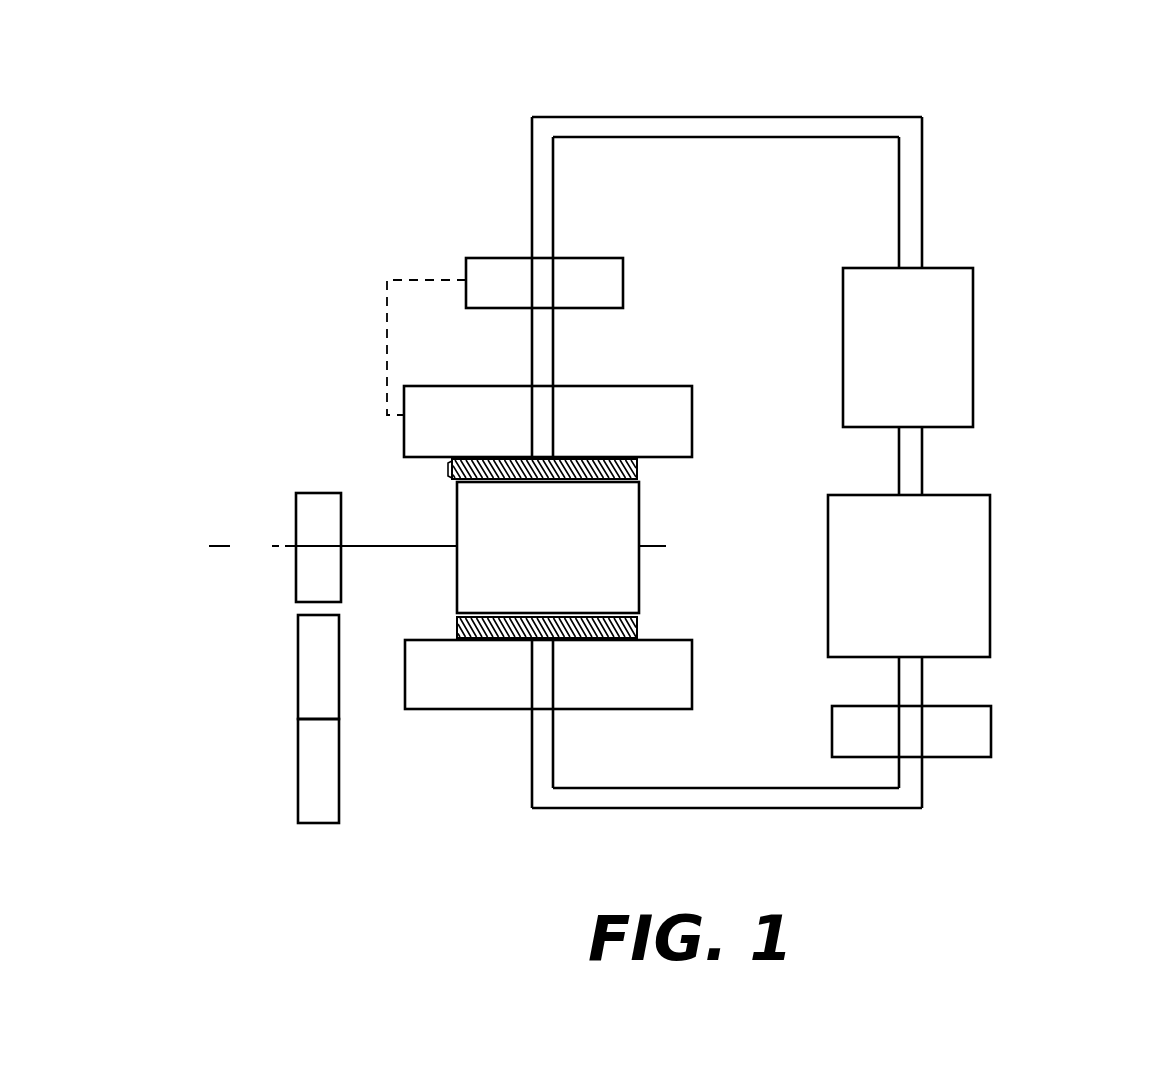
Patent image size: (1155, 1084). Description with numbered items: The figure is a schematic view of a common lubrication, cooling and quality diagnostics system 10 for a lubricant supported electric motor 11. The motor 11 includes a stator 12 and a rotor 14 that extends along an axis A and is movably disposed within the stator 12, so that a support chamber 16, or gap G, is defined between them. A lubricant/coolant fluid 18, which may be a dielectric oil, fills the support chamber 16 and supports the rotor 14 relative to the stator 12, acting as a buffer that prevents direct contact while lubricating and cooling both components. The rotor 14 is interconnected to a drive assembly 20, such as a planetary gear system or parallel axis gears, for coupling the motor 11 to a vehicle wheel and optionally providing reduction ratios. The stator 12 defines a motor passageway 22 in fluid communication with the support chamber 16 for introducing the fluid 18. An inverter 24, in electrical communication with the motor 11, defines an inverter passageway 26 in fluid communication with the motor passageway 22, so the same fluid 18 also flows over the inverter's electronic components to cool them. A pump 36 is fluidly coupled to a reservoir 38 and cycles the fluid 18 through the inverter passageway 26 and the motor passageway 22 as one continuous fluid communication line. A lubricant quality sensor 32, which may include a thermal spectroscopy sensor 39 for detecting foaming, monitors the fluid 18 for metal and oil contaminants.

The common lubrication, cooling and quality diagnostics system 10 is at (960, 98).
The lubricant supported electric motor 11 is at (415, 592).
The stator 12 is at (648, 386).
The rotor 14 is at (637, 517).
The support chamber 16 is at (637, 467).
The lubricant/coolant fluid 18 is at (455, 628).
The drive assembly 20 is at (298, 680).
The motor passageway 22 is at (555, 415).
The inverter 24 is at (625, 277).
The inverter passageway 26 is at (555, 280).
The lubricant quality sensor 32 is at (1010, 696).
The pump 36 is at (948, 268).
The reservoir 38 is at (947, 495).
The thermal spectroscopy sensor 39 is at (980, 727).
The axis A is at (230, 547).
The gap G is at (452, 463).